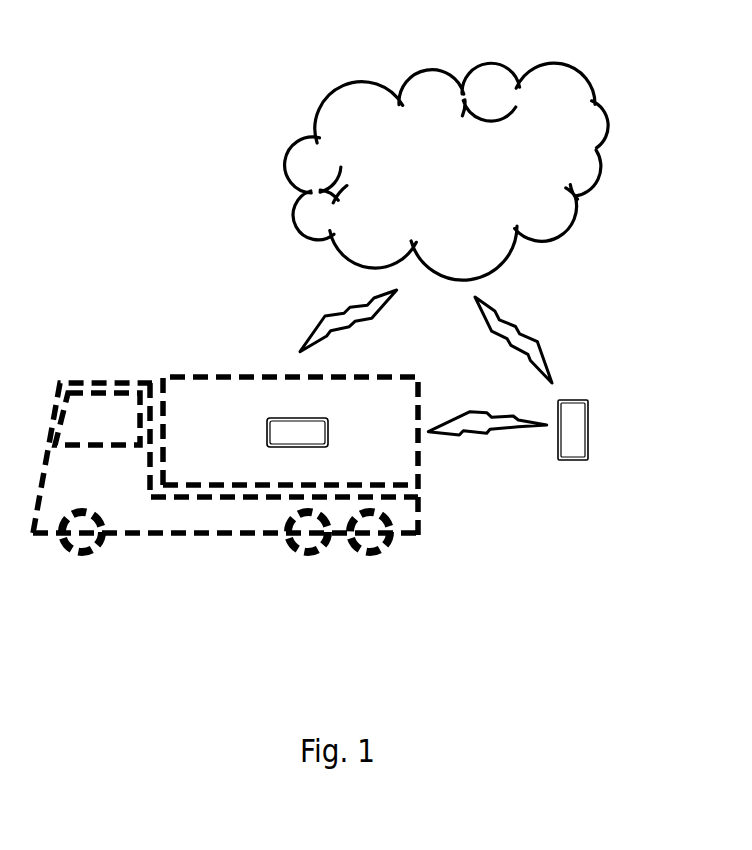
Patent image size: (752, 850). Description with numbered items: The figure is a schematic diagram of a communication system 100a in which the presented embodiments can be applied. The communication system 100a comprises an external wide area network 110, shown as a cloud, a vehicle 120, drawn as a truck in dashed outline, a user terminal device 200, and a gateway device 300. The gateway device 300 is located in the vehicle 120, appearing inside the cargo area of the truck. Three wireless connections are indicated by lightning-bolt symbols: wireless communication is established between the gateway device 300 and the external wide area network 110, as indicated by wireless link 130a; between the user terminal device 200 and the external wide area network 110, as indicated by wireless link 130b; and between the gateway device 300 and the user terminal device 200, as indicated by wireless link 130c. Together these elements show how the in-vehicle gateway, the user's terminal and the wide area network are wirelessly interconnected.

The communication system 100a is at (174, 57).
The external wide area network 110 is at (610, 210).
The vehicle 120 is at (155, 508).
The wireless link 130a is at (331, 313).
The wireless link 130b is at (543, 352).
The wireless link 130c is at (485, 433).
The user terminal device 200 is at (575, 460).
The gateway device 300 is at (285, 443).